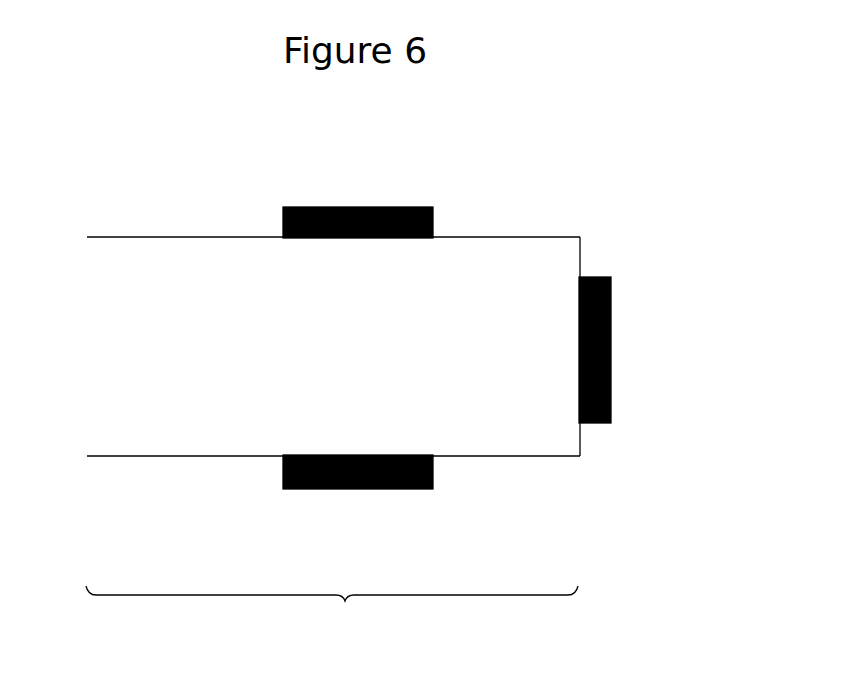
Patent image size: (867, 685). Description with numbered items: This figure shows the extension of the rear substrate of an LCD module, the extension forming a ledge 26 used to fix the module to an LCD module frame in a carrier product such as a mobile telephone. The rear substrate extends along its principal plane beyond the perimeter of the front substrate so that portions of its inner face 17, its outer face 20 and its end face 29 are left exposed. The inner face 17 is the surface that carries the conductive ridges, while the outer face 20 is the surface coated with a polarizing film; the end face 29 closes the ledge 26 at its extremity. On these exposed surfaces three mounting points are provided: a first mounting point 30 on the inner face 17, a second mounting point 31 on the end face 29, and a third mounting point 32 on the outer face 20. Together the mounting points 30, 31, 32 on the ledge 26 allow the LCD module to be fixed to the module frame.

The inner face 17 is at (167, 225).
The outer face 20 is at (182, 477).
The ledge 26 is at (332, 611).
The end face 29 is at (603, 243).
The mounting point 30 is at (358, 209).
The mounting point 31 is at (611, 350).
The mounting point 32 is at (358, 487).